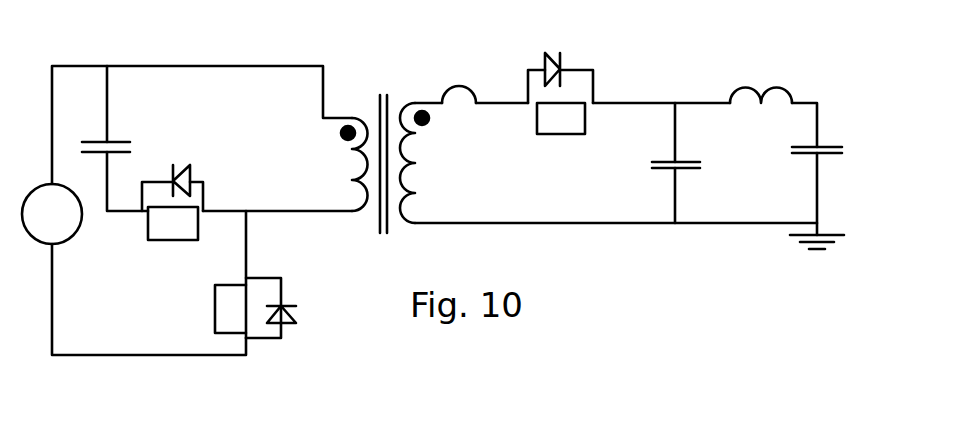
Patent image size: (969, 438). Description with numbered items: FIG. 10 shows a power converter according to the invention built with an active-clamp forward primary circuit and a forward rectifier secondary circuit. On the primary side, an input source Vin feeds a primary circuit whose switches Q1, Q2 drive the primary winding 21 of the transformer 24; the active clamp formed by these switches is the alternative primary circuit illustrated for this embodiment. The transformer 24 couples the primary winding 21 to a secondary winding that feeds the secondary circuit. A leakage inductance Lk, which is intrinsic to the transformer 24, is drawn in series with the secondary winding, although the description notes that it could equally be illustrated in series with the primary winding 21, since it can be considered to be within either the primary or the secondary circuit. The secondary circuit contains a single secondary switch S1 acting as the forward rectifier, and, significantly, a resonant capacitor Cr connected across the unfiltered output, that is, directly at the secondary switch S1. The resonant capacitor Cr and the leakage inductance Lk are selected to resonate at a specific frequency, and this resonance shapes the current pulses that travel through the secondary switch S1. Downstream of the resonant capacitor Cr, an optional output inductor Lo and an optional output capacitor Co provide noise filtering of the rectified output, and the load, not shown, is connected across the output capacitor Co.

The primary winding 21 is at (357, 177).
The transformer 24 is at (378, 114).
The input voltage source Vin is at (52, 214).
The switch Q1 is at (172, 202).
The switch Q2 is at (255, 274).
The leakage inductance Lk is at (459, 88).
The secondary switch S1 is at (560, 93).
The resonant capacitor Cr is at (692, 160).
The output inductor Lo is at (746, 87).
The output capacitor Co is at (836, 145).